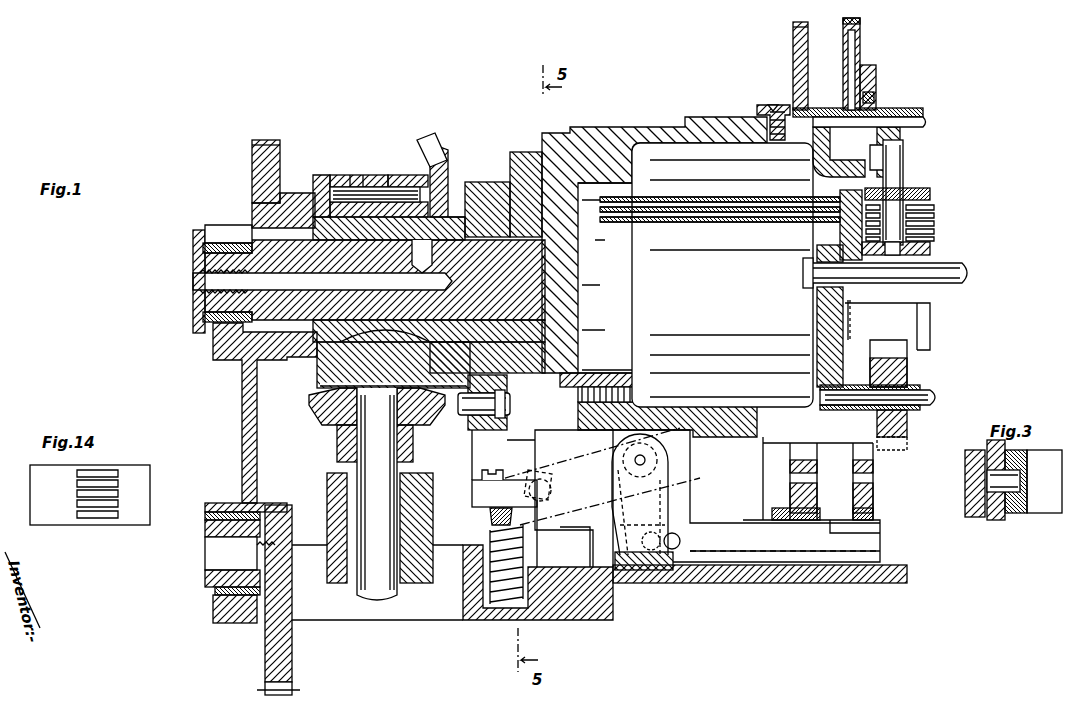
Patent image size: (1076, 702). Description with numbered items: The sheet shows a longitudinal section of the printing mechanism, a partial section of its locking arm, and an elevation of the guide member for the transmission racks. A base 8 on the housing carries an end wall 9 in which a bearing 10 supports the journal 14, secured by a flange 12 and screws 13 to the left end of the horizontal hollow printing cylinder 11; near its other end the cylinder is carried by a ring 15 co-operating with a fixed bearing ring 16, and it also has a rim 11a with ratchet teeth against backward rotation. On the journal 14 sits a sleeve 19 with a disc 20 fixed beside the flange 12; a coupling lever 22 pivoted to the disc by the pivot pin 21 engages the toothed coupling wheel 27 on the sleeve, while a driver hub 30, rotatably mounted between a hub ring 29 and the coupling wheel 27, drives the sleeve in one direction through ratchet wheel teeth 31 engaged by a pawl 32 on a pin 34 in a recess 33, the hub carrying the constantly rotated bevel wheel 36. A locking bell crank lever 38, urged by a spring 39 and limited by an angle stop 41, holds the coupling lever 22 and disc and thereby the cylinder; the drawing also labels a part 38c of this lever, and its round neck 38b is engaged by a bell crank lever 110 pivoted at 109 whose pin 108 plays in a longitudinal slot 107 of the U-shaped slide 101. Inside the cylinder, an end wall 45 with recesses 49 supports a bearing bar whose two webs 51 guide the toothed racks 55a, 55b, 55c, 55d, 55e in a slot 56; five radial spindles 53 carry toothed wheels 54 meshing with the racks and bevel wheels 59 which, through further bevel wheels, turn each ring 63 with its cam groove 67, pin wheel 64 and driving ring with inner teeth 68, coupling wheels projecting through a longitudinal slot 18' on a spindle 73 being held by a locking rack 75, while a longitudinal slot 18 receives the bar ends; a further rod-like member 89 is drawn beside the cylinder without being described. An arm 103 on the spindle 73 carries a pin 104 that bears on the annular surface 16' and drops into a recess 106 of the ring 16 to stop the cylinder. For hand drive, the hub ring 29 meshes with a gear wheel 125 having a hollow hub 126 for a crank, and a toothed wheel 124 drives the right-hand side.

In FIG. 1, the base 8 is at (605, 578).
In FIG. 1, the end wall 9 is at (222, 412).
In FIG. 1, the bearing 10 is at (207, 232).
In FIG. 1, the printing cylinder 11 is at (698, 420).
In FIG. 1, the rim 11a is at (790, 35).
In FIG. 1, the flange 12 is at (580, 318).
In FIG. 1, the screws 13 is at (630, 395).
In FIG. 1, the journal 14 is at (240, 250).
In FIG. 3, the ring 15 is at (995, 518).
In FIG. 3, the fixed bearing ring 16 is at (1044, 481).
In FIG. 3, the annular surface 16' is at (1022, 533).
In FIG. 1, the longitudinal slot 18 is at (773, 110).
In FIG. 1, the longitudinal slot 18' is at (776, 499).
In FIG. 1, the sleeve 19 is at (362, 230).
In FIG. 1, the disc 20 is at (522, 160).
In FIG. 1, the pivot pin 21 is at (468, 428).
In FIG. 1, the coupling lever 22 is at (465, 418).
In FIG. 1, the coupling wheel 27 is at (484, 190).
In FIG. 1, the hub ring 29 is at (300, 208).
In FIG. 1, the driver hub 30 is at (420, 178).
In FIG. 1, the ratchet wheel teeth 31 is at (375, 325).
In FIG. 1, the pawl 32 is at (388, 180).
In FIG. 1, the recess 33 is at (352, 180).
In FIG. 1, the pin 34 is at (335, 190).
In FIG. 1, the bevel wheel 36 is at (443, 147).
In FIG. 1, the locking bell crank lever 38 is at (472, 492).
In FIG. 1, the round neck 38b is at (540, 502).
In FIG. 1, the stop 38c is at (482, 474).
In FIG. 1, the spring 39 is at (488, 519).
In FIG. 1, the angle stop 41 is at (540, 437).
In FIG. 1, the end wall 45 is at (825, 357).
In FIG. 1, the recesses 49 is at (815, 156).
In FIG. 1, the webs 51 is at (840, 228).
In FIG. 14, the webs 51 is at (148, 478).
In FIG. 1, the radial spindles 53 is at (932, 250).
In FIG. 1, the toothed wheels 54 is at (915, 192).
In FIG. 1, the toothed rack 55a is at (670, 198).
In FIG. 1, the toothed rack 55b is at (656, 212).
In FIG. 1, the toothed rack 55c is at (708, 222).
In FIG. 1, the toothed rack 55d is at (934, 212).
In FIG. 1, the toothed rack 55e is at (936, 233).
In FIG. 14, the slot 56 is at (110, 486).
In FIG. 1, the bevel wheel 59 is at (880, 143).
In FIG. 1, the ring 63 is at (877, 80).
In FIG. 1, the pin wheel 64 is at (846, 40).
In FIG. 1, the cam groove 67 is at (876, 97).
In FIG. 1, the inner teeth 68 is at (877, 428).
In FIG. 1, the spindle 73 is at (818, 395).
In FIG. 1, the locking rack 75 is at (920, 345).
In FIG. 1, the rod 89 is at (928, 278).
In FIG. 1, the U-shaped slide 101 is at (788, 575).
In FIG. 3, the arm 103 is at (968, 455).
In FIG. 3, the pin 104 is at (1020, 510).
In FIG. 3, the recess 106 is at (1022, 490).
In FIG. 1, the longitudinal slot 107 is at (680, 541).
In FIG. 1, the pin 108 is at (665, 525).
In FIG. 1, the pivot 109 is at (646, 460).
In FIG. 1, the bell crank lever 110 is at (622, 507).
In FIG. 1, the toothed wheel 124 is at (265, 142).
In FIG. 1, the gear wheel 125 is at (285, 635).
In FIG. 1, the hollow hub 126 is at (228, 575).